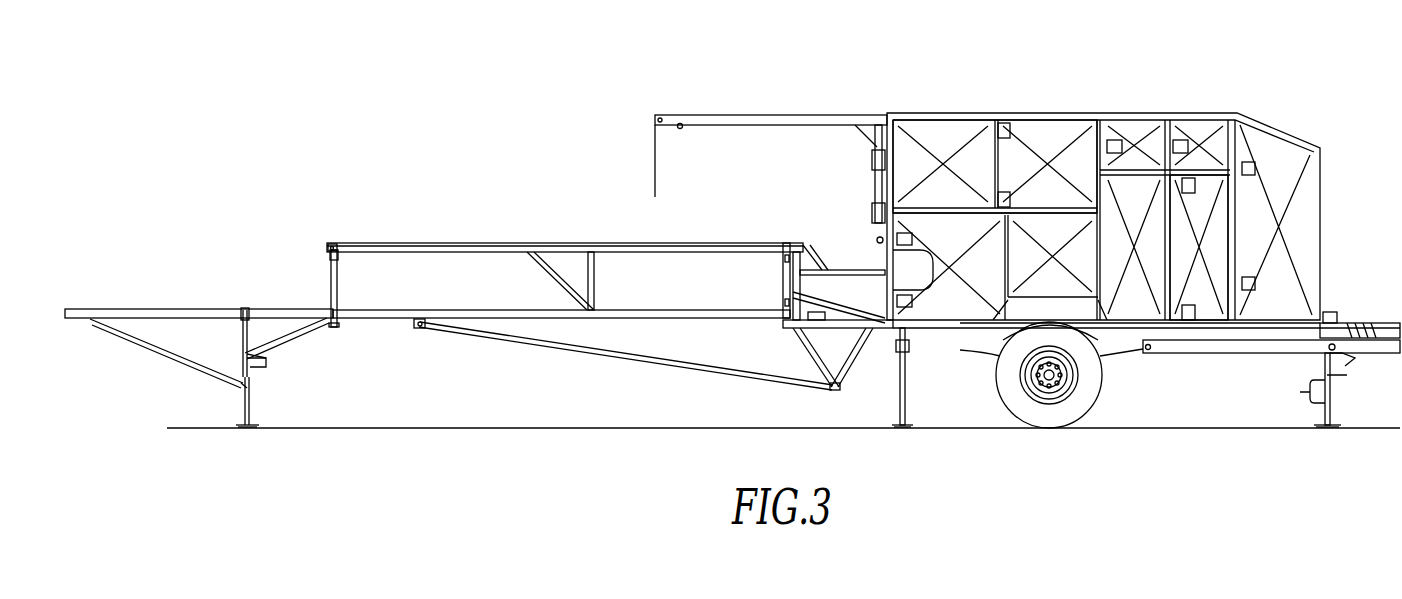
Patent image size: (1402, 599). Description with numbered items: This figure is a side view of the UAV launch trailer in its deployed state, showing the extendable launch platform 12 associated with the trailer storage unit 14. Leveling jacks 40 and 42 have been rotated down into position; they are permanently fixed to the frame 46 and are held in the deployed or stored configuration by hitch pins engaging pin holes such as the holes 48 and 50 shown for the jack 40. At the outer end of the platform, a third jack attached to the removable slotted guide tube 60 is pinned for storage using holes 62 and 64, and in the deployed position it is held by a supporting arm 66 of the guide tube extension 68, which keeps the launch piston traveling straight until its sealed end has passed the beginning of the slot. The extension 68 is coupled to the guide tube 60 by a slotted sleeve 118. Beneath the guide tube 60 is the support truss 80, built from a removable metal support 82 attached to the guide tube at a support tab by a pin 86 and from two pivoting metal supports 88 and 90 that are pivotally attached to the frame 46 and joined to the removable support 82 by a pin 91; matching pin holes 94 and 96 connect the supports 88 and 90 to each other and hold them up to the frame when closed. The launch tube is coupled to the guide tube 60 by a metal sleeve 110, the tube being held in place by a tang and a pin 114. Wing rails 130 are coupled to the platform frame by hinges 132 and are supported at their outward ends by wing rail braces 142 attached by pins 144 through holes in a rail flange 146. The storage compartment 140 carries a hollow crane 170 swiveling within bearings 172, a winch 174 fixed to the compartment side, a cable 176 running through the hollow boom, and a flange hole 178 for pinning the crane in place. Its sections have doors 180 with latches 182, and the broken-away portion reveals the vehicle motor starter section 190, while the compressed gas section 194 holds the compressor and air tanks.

The extendable launch platform 12 is at (333, 178).
The trailer storage unit 14 is at (1250, 100).
The leveling jack 40 is at (1335, 393).
The leveling jack 42 is at (906, 378).
The frame 46 is at (1362, 318).
The pin hole 48 is at (1322, 366).
The pin hole 50 is at (1352, 352).
The slotted guide tube 60 is at (482, 310).
The hole 62 is at (268, 363).
The hole 64 is at (243, 410).
The supporting arm 66 is at (152, 352).
The guide tube extension 68 is at (97, 309).
The support truss 80 is at (570, 370).
The removable metal support 82 is at (636, 358).
The pin 86 is at (415, 326).
The pivoting metal support 88 is at (800, 350).
The pivoting metal support 90 is at (863, 355).
The pin 91 is at (834, 388).
The pin hole 94 is at (810, 372).
The pin hole 96 is at (845, 375).
The metal sleeve 110 is at (811, 312).
The pin 114 is at (326, 350).
The slotted sleeve 118 is at (243, 310).
The wing rail 130 is at (455, 243).
The hinge 132 is at (783, 259).
The trailer storage compartment 140 is at (1070, 113).
The wing rail brace 142 is at (331, 292).
The pin 144 is at (333, 247).
The rail flange 146 is at (338, 258).
The hollow crane 170 is at (722, 113).
The bearing 172 is at (873, 205).
The winch 174 is at (878, 238).
The cable 176 is at (652, 167).
The flange hole 178 is at (681, 128).
The door 180 is at (985, 220).
The latch 182 is at (914, 238).
The vehicle motor starter section 190 is at (928, 289).
The compressed gas section 194 is at (1207, 303).